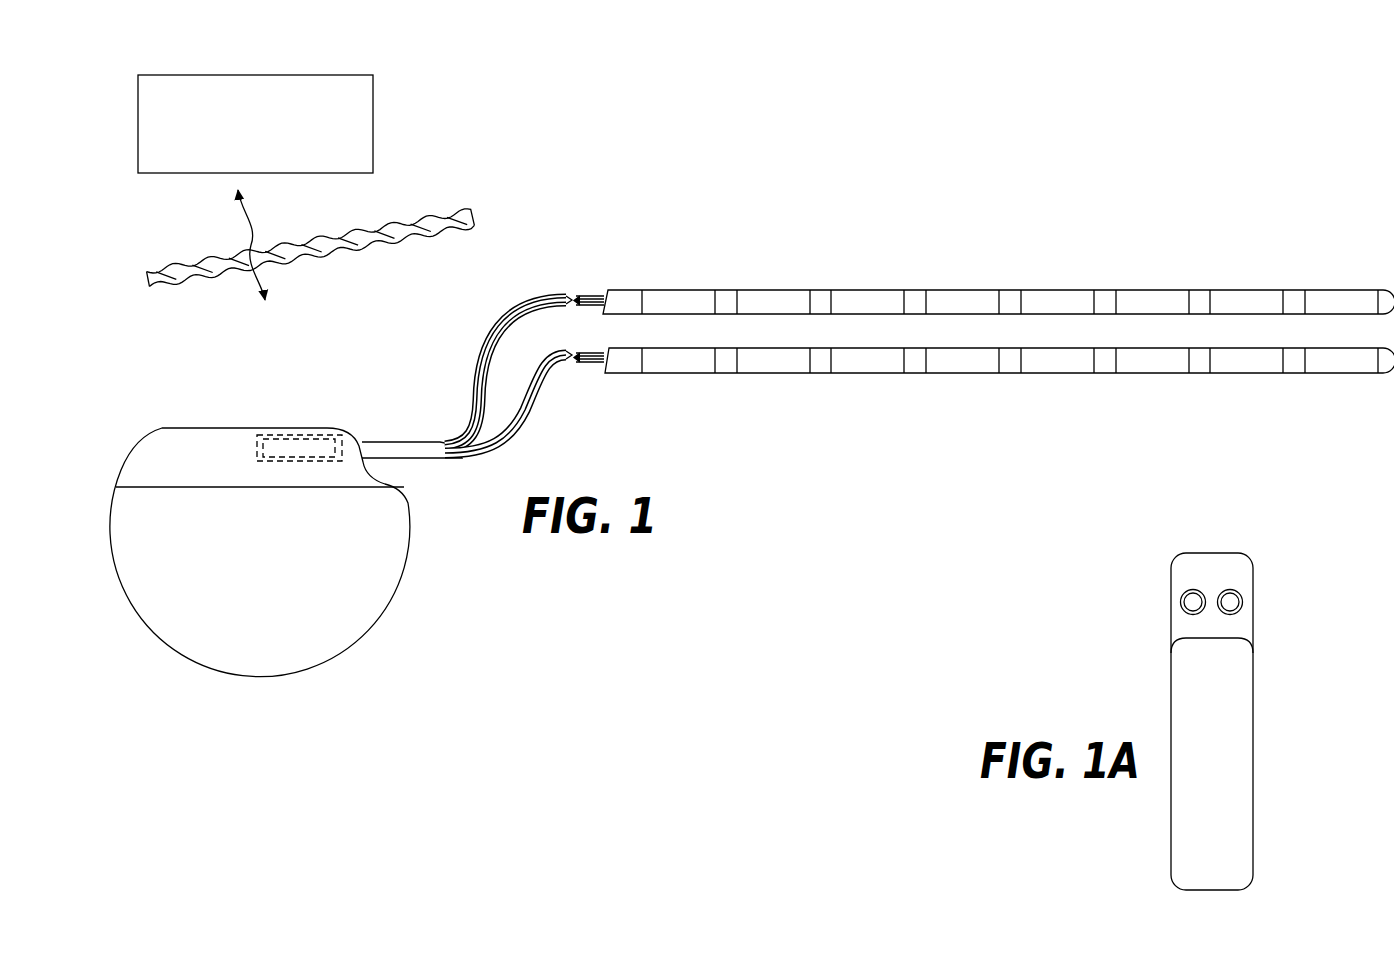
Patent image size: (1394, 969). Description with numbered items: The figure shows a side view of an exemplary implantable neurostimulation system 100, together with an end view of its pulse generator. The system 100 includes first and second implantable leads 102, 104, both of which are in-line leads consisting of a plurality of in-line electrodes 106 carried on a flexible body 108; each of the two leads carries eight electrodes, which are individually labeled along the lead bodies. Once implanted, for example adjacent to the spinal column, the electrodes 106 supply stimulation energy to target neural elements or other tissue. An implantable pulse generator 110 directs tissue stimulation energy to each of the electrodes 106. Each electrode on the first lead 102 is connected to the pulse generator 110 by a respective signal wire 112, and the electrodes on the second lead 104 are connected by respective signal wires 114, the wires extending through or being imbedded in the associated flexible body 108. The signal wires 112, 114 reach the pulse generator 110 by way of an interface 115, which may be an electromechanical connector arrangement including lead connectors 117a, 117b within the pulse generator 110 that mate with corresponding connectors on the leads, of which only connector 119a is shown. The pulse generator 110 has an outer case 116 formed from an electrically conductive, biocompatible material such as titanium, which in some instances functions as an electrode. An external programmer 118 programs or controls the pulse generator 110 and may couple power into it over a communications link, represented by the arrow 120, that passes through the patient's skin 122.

In FIG. 1, the implantable neurostimulation system 100 is at (762, 156).
In FIG. 1, the first implantable lead 102 is at (660, 266).
In FIG. 1, the second implantable lead 104 is at (705, 402).
In FIG. 1, the in-line electrodes 106 is at (868, 290).
In FIG. 1, the flexible body 108 is at (725, 290).
In FIG. 1, the implantable pulse generator 110 is at (298, 511).
In FIG. 1A, the implantable pulse generator 110 is at (1213, 694).
In FIG. 1, the signal wire 112 is at (505, 317).
In FIG. 1, the signal wires 114 is at (542, 383).
In FIG. 1, the interface 115 is at (314, 398).
In FIG. 1, the outer case 116 is at (413, 548).
In FIG. 1A, the outer case 116 is at (1255, 673).
In FIG. 1, the lead connector 117a is at (287, 433).
In FIG. 1A, the lead connector 117a is at (1192, 590).
In FIG. 1A, the lead connector 117b is at (1232, 590).
In FIG. 1, the external programmer 118 is at (257, 75).
In FIG. 1, the connector 119a is at (333, 429).
In FIG. 1, the communications link 120 is at (262, 282).
In FIG. 1, the patient's skin 122 is at (445, 212).